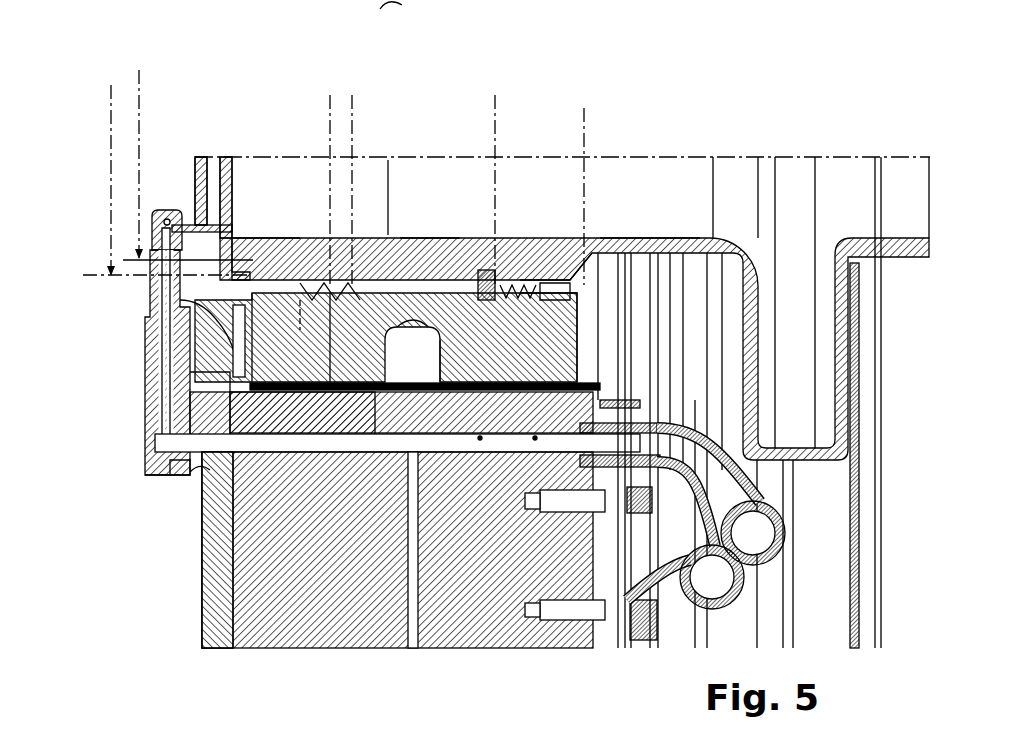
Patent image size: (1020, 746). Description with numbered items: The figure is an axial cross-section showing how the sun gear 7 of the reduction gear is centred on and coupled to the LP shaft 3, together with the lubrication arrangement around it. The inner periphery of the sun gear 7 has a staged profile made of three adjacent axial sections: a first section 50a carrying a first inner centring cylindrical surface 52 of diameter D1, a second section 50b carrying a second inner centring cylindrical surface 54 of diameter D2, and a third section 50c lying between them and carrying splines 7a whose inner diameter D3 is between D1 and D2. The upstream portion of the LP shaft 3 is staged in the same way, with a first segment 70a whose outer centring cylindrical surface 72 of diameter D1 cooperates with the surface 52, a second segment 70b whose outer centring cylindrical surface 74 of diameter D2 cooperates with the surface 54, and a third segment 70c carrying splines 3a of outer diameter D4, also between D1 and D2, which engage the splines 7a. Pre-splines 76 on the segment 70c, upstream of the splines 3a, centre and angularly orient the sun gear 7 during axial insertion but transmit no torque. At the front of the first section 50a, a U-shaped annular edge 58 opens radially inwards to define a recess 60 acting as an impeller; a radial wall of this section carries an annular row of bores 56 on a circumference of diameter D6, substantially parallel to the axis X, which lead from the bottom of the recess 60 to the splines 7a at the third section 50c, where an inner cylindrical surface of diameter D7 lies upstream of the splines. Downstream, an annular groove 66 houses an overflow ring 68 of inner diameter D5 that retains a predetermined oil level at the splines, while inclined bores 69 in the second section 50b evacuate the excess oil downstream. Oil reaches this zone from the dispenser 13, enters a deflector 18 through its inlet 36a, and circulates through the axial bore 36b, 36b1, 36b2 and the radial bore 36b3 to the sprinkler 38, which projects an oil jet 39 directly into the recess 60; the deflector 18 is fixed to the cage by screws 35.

The LP shaft 3 is at (917, 258).
The splines of the LP shaft 3a is at (388, 160).
The sun gear 7 is at (607, 287).
The splines of the sun gear 7a is at (372, 330).
The dispenser 13 is at (802, 513).
The deflector 18 is at (135, 487).
The screws 35 is at (552, 612).
The inlet 36a is at (650, 400).
The axial bore 36b is at (342, 572).
The axial bore 36b1 is at (218, 445).
The support block section 36b2 is at (413, 600).
The radial bore 36b3 is at (188, 472).
The sprinkler 38 is at (145, 357).
The oil jet 39 is at (167, 212).
The first section 50a is at (313, 247).
The second section 50b is at (603, 325).
The third section 50c is at (330, 388).
The first inner centring cylindrical surface 52 is at (262, 308).
The second inner centring cylindrical surface 54 is at (510, 330).
The first bores 56 is at (180, 374).
The annular edge 58 is at (215, 320).
The annular recess 60 is at (202, 228).
The annular groove 66 is at (452, 320).
The overflow ring 68 is at (527, 245).
The bores 69 is at (508, 345).
The first segment 70a is at (262, 232).
The second segment 70b is at (627, 232).
The third segment 70c is at (427, 232).
The first outer centring cylindrical surface 72 is at (226, 235).
The second outer centring cylindrical surface 74 is at (560, 245).
The pre-splines 76 is at (283, 245).
The diameter of the first centring surfaces D1 is at (139, 100).
The diameter of the second centring surfaces D2 is at (584, 125).
The inner diameter of the sun gear splines D3 is at (352, 112).
The outer diameter of the shaft splines D4 is at (330, 112).
The inner diameter of the overflow ring D5 is at (495, 175).
The diameter of the circumference of the bores D6 is at (110, 184).
The diameter of the upstream inner cylindrical surface D7 is at (304, 328).
The axis X is at (920, 152).